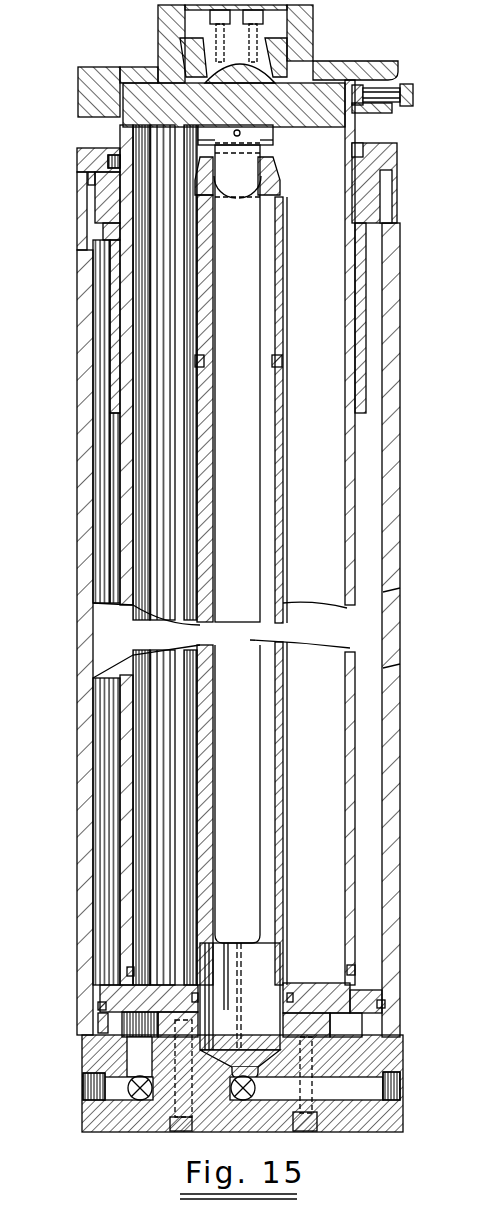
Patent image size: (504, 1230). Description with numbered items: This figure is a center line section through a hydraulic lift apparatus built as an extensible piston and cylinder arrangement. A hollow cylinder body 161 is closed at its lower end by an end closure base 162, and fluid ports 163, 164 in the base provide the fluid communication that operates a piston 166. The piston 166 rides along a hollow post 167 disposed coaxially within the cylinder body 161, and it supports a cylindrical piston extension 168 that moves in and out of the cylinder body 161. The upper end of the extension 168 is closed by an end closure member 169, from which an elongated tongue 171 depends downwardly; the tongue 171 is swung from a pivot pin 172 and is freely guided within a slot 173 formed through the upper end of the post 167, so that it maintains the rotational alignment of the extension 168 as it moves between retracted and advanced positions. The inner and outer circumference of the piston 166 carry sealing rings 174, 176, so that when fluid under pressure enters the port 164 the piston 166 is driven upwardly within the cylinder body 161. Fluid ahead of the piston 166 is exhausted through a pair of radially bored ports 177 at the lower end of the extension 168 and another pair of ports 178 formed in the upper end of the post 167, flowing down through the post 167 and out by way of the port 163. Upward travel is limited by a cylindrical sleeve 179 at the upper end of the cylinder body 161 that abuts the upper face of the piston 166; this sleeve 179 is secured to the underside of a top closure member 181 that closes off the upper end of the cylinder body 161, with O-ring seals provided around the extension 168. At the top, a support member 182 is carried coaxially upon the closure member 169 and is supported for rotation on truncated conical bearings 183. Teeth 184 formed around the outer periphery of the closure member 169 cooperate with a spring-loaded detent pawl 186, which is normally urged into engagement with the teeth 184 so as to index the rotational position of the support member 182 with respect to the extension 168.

The hollow cylinder body 161 is at (394, 878).
The end closure base 162 is at (361, 1118).
The fluid port 163 is at (403, 1086).
The fluid port 164 is at (113, 1095).
The piston 166 is at (316, 992).
The hollow post 167 is at (282, 822).
The cylindrical piston extension 168 is at (356, 480).
The end closure member 169 is at (316, 105).
The elongated tongue 171 is at (254, 311).
The pivot pin 172 is at (240, 133).
The slot 173 is at (238, 198).
The sealing ring 174 is at (198, 997).
The sealing ring 176 is at (102, 1007).
The radially bored ports 177 is at (126, 971).
The ports 178 is at (272, 362).
The cylindrical sleeve 179 is at (366, 377).
The top closure member 181 is at (382, 161).
The support member 182 is at (386, 71).
The truncated conical bearings 183 is at (280, 66).
The teeth 184 is at (376, 74).
The detent pawl 186 is at (414, 95).